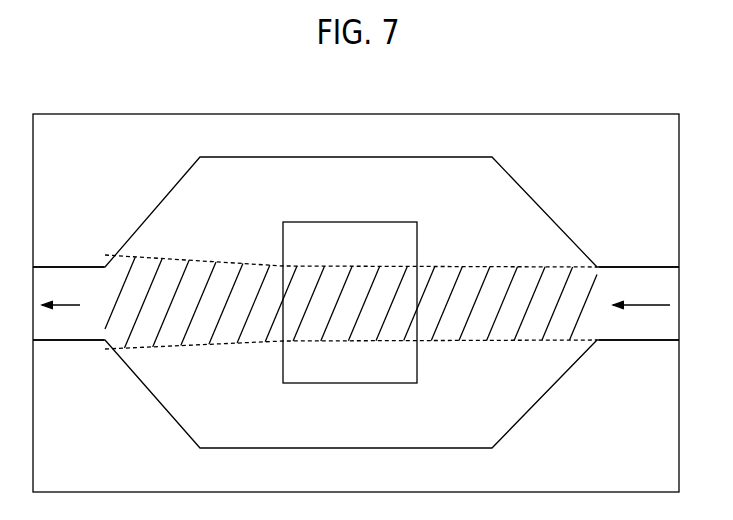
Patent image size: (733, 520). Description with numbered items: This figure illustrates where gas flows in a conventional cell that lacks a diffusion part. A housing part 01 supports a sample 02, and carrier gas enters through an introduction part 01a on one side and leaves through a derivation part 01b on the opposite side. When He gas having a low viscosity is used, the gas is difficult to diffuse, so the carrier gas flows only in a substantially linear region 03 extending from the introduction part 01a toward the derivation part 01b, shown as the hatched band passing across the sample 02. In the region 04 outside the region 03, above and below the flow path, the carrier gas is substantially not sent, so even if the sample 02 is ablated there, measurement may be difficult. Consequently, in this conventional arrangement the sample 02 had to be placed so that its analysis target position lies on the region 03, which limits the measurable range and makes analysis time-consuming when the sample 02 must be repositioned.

The housing part 01 is at (301, 163).
The introduction part 01a is at (631, 266).
The derivation part 01b is at (68, 325).
The sample 02 is at (322, 222).
The substantially linear region 03 is at (473, 343).
The region outside the gas-flow region 04 is at (266, 216).